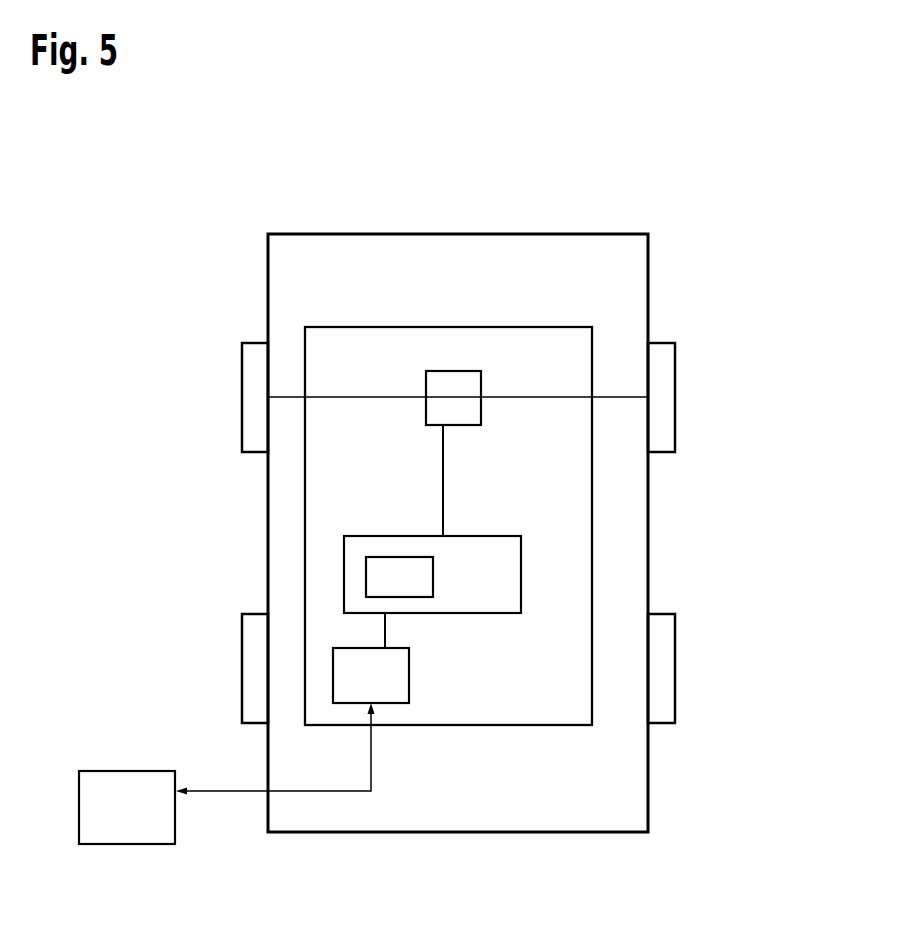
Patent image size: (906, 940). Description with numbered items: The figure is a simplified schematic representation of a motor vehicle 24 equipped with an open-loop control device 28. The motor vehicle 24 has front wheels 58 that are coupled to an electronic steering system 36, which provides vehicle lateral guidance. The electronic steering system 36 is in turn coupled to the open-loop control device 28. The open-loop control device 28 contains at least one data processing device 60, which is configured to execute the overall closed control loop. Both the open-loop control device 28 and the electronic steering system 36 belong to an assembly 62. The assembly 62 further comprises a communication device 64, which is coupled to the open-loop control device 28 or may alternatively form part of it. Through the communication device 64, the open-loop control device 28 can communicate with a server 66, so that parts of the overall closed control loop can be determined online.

The motor vehicle 24 is at (686, 197).
The front wheels 58 is at (242, 387).
The assembly 62 is at (553, 726).
The electronic steering system 36 is at (432, 426).
The open-loop control device 28 is at (344, 563).
The data processing device 60 is at (433, 577).
The communication device 64 is at (333, 659).
The server 66 is at (107, 770).